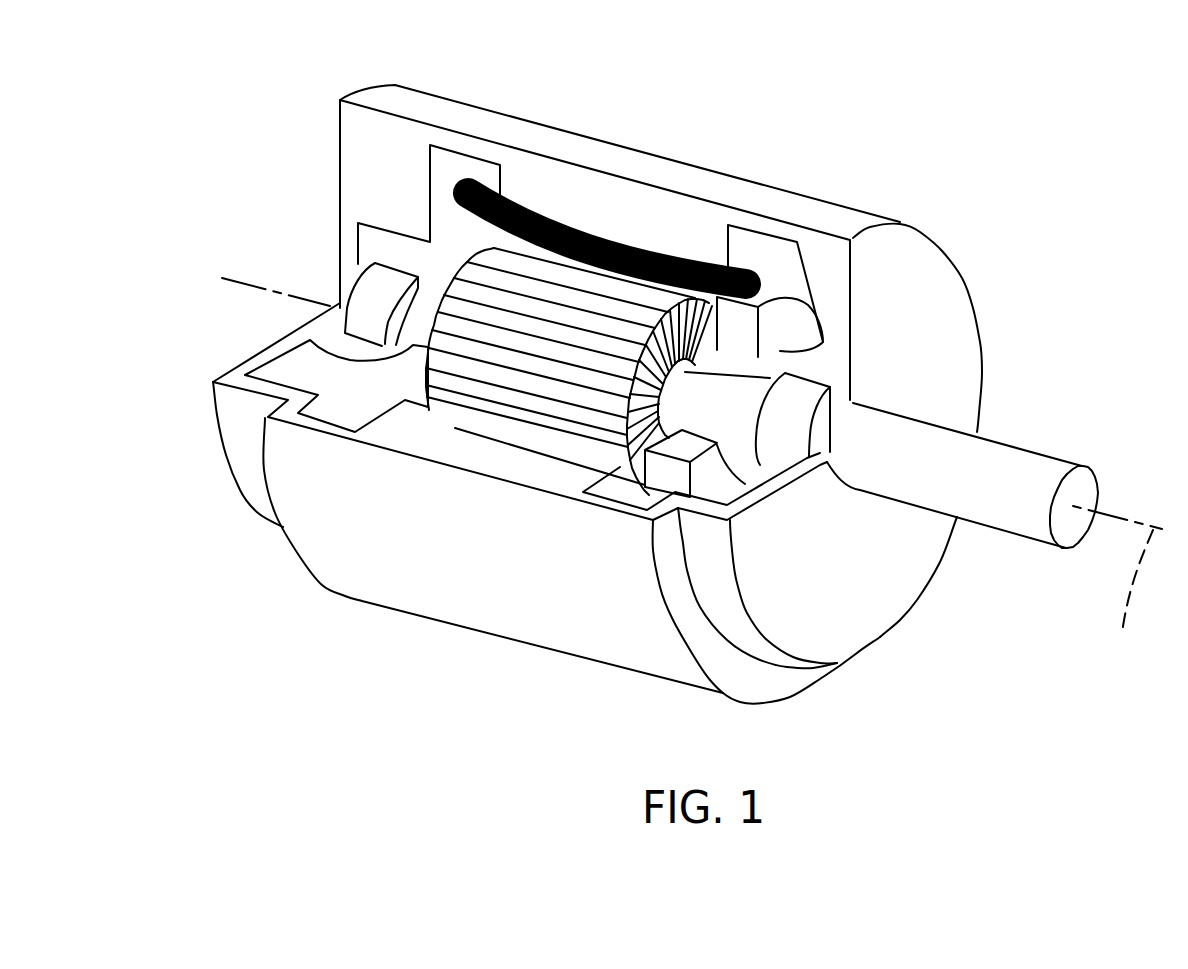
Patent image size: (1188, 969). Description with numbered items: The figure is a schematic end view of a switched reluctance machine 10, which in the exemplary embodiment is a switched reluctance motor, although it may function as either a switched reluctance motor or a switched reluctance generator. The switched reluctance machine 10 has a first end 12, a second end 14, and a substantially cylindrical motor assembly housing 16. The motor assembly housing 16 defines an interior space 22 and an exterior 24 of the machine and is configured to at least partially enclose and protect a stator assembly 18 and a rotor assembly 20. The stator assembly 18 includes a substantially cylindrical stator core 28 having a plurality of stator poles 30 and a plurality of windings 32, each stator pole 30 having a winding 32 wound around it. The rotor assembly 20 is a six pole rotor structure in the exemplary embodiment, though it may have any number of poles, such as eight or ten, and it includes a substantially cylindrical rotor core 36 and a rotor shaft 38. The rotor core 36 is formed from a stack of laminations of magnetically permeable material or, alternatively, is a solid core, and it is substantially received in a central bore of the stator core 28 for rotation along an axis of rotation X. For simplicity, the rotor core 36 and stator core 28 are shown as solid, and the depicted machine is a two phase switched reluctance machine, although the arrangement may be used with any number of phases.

The switched reluctance machine 10 is at (957, 122).
The first end 12 is at (250, 88).
The second end 14 is at (987, 233).
The motor assembly housing 16 is at (793, 192).
The stator assembly 18 is at (537, 218).
The rotor assembly 20 is at (538, 378).
The interior space 22 is at (385, 189).
The exterior 24 is at (368, 85).
The stator core 28 is at (573, 235).
The stator pole 30 is at (745, 268).
The winding 32 is at (643, 253).
The rotor core 36 is at (637, 425).
The rotor shaft 38 is at (1048, 455).